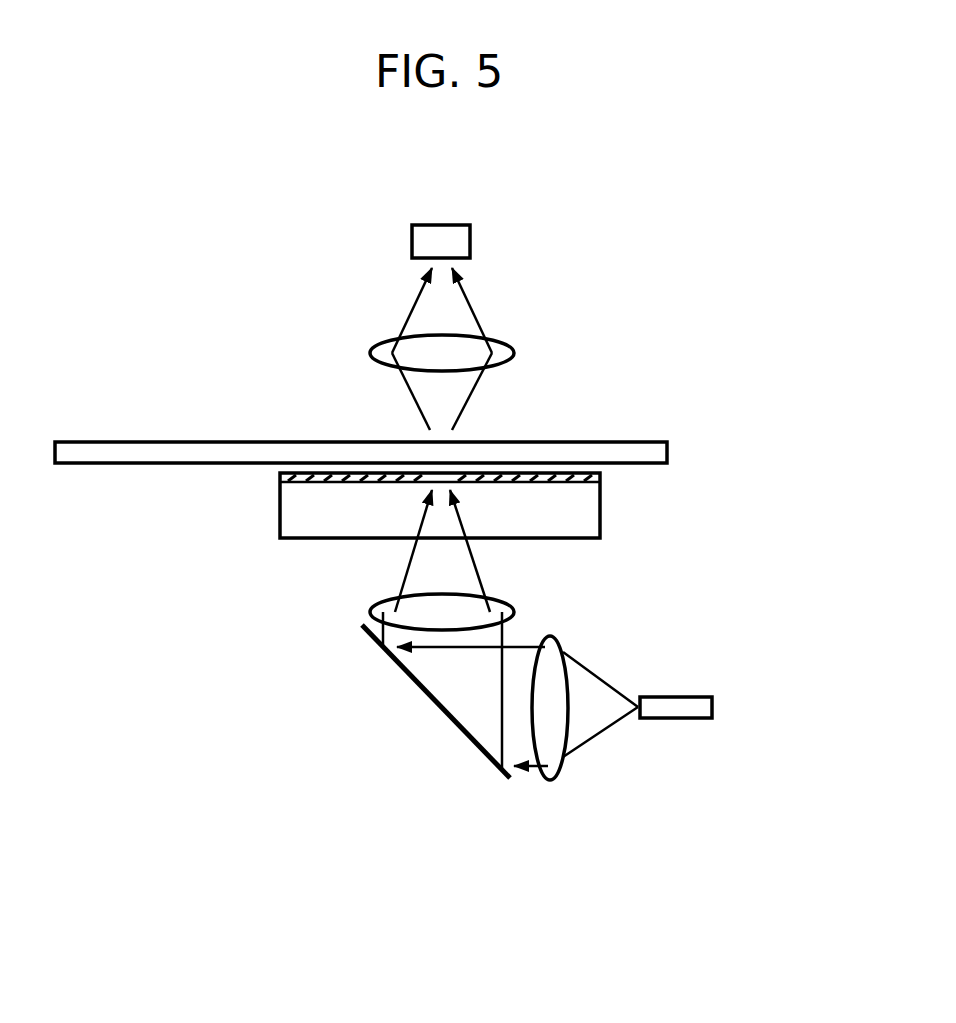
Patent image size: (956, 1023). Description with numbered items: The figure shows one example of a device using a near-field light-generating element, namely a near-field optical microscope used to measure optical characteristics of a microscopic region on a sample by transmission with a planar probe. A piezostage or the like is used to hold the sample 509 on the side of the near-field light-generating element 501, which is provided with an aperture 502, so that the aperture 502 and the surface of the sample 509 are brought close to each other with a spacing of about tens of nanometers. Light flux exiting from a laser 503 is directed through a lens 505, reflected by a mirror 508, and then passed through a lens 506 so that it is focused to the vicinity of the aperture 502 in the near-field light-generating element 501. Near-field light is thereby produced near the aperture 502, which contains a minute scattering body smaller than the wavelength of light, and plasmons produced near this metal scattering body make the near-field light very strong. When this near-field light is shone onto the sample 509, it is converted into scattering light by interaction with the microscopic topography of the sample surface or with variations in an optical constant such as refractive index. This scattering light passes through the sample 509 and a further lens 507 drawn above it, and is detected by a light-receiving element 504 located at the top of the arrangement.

The near-field light-generating element 501 is at (600, 510).
The aperture 502 is at (440, 470).
The laser 503 is at (677, 697).
The light-receiving element 504 is at (460, 223).
The lens 505 is at (562, 780).
The lens 506 is at (372, 605).
The imaging lens 507 is at (503, 353).
The mirror 508 is at (445, 715).
The sample 509 is at (623, 440).